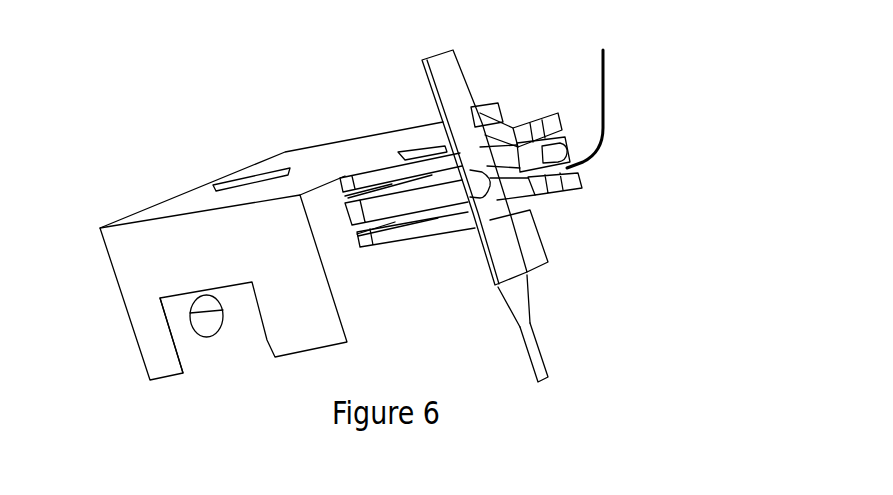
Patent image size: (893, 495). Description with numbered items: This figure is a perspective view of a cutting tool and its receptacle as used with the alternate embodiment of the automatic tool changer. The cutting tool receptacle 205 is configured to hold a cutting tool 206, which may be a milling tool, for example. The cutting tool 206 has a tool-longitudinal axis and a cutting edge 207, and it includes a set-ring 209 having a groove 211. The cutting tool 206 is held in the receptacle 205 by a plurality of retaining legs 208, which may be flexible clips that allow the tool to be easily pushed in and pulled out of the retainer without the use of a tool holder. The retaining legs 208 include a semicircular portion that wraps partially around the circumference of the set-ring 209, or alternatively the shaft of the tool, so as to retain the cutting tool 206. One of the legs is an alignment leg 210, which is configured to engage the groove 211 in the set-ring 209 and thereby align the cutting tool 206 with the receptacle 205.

The cutting tool receptacle 205 is at (333, 148).
The cutting tool 206 is at (505, 293).
The cutting edge 207 is at (548, 378).
The retaining legs 208 is at (563, 118).
The set-ring 209 is at (503, 137).
The alignment leg 210 is at (445, 195).
The groove 211 is at (583, 190).